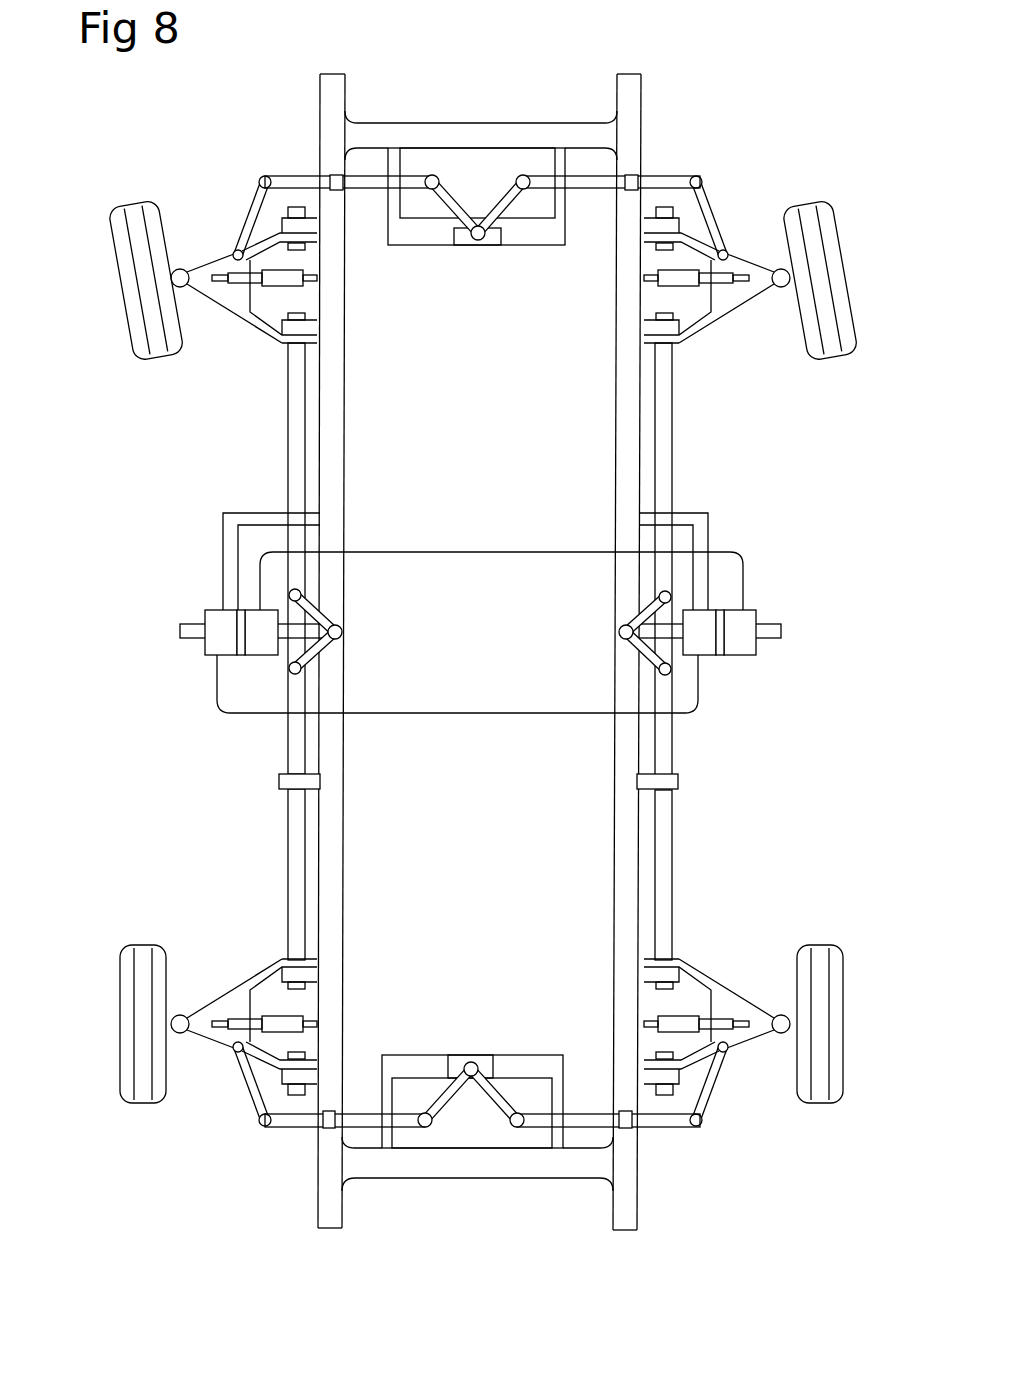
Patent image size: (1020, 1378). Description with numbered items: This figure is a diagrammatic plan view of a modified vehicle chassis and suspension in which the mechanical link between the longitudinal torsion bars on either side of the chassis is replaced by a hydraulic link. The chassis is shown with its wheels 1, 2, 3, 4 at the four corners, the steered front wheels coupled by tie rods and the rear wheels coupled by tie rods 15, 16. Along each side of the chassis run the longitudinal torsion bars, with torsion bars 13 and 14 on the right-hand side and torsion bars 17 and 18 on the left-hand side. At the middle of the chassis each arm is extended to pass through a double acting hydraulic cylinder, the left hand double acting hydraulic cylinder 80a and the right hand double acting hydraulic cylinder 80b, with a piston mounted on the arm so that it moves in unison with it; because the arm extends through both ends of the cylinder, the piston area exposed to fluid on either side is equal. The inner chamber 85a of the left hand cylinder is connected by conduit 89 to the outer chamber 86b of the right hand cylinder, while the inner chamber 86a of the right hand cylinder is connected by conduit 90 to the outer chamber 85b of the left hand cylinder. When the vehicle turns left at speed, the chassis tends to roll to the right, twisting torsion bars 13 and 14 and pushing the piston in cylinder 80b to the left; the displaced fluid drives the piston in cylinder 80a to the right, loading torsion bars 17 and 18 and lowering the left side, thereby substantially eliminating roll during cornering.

The front left wheel 1 is at (137, 238).
The front right wheel 2 is at (808, 238).
The rear right wheel 3 is at (816, 973).
The rear left wheel 4 is at (143, 973).
The torsion bar 13 is at (678, 493).
The torsion bar 14 is at (680, 903).
The right rear tie rod 15 is at (588, 1105).
The left rear tie rod 16 is at (358, 1105).
The torsion bar 17 is at (284, 903).
The torsion bar 18 is at (286, 493).
The left hand double acting hydraulic cylinder 80a is at (211, 656).
The right hand double acting hydraulic cylinder 80b is at (741, 635).
The inner chamber of left hand cylinder 85a is at (260, 648).
The outer chamber of left hand cylinder 85b is at (212, 647).
The inner chamber of right hand cylinder 86a is at (702, 648).
The outer chamber of right hand cylinder 86b is at (760, 650).
The conduit 89 is at (528, 548).
The conduit 90 is at (383, 715).